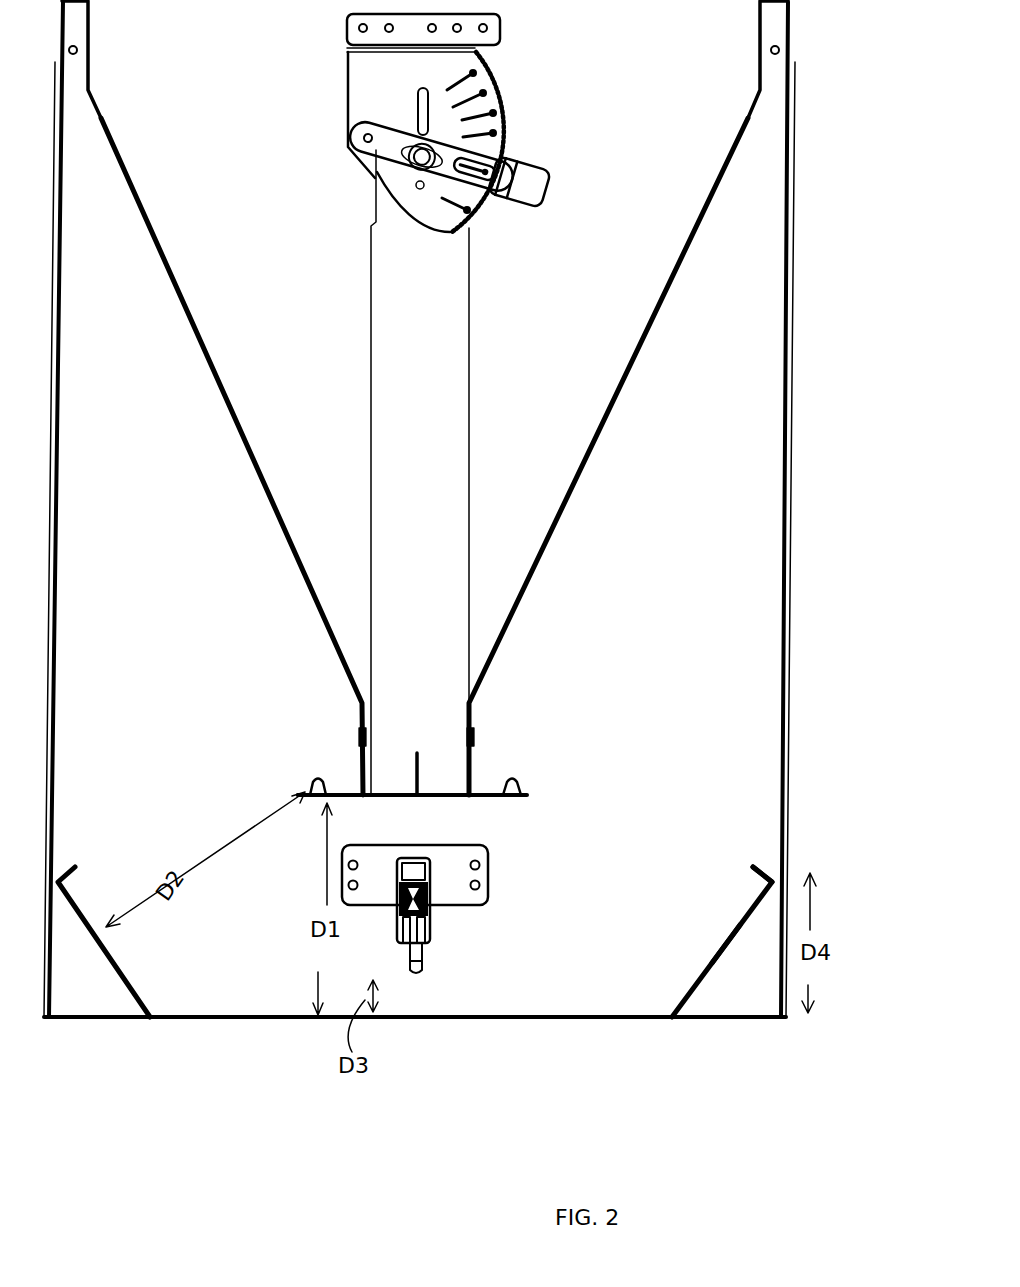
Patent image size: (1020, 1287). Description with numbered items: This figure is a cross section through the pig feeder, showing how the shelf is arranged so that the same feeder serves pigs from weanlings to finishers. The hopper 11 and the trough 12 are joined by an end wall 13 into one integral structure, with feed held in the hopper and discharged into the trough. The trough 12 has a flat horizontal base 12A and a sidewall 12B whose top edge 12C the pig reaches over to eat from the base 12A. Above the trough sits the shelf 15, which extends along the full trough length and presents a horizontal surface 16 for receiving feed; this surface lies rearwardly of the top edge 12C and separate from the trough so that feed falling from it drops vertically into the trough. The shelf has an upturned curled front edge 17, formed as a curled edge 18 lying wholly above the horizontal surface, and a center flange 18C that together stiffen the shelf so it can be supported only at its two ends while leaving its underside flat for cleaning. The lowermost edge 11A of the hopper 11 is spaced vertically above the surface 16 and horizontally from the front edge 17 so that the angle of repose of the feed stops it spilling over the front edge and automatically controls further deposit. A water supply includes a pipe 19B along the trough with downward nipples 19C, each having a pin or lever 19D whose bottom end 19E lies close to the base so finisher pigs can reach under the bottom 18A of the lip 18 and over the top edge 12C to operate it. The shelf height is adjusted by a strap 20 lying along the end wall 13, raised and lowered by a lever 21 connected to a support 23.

The hopper 11 is at (560, 522).
The lowermost edge of the hopper 11A is at (475, 745).
The trough 12 is at (712, 975).
The base of the trough 12A is at (608, 1015).
The sidewall of the trough 12B is at (728, 938).
The top edge of the sidewall 12C is at (778, 868).
The end wall 13 is at (578, 931).
The shelf 15 is at (482, 795).
The horizontal surface of the shelf 16 is at (350, 795).
The front edge of the shelf 17 is at (313, 782).
The curled edge 18 is at (520, 790).
The bottom of the lip 18A is at (310, 803).
The flange 18C is at (418, 755).
The pipe 19B is at (432, 848).
The nipple 19C is at (432, 917).
The pin or lever 19D is at (423, 975).
The bottom end of the pin 19E is at (420, 990).
The strap 20 is at (453, 408).
The lever 21 is at (522, 160).
The support 23 is at (520, 87).